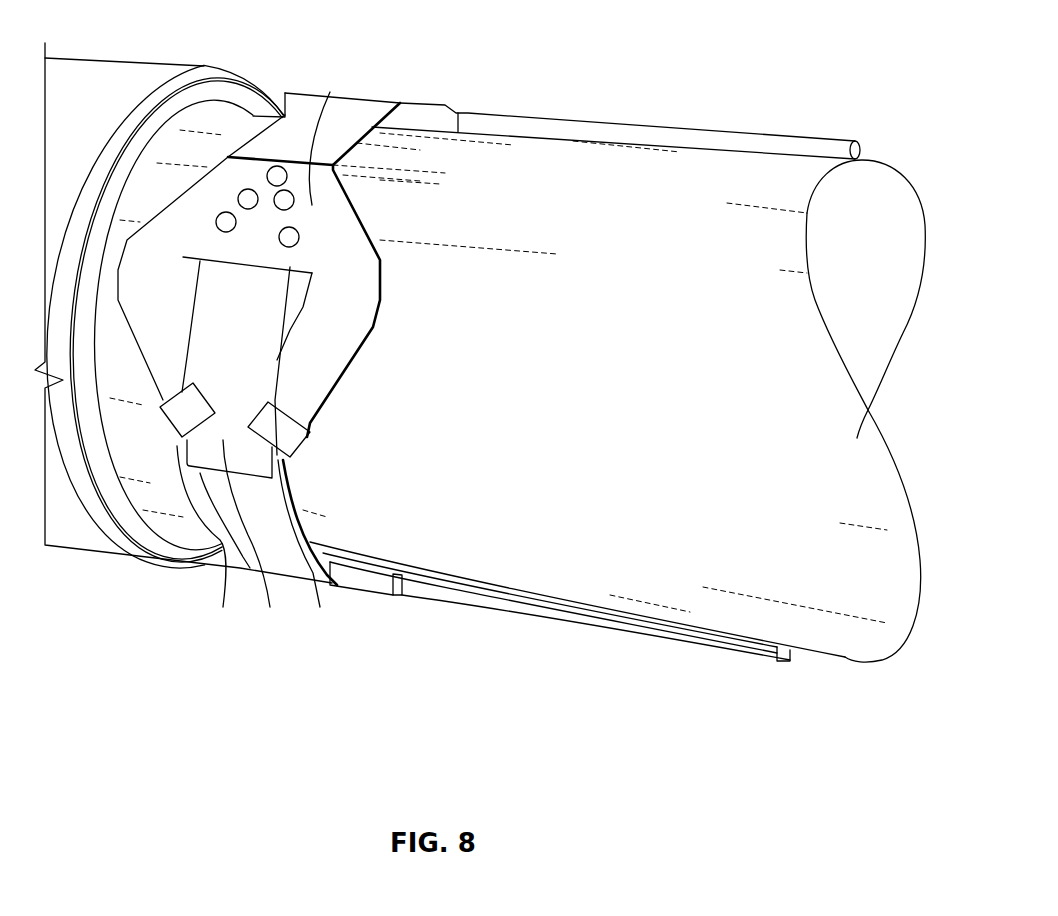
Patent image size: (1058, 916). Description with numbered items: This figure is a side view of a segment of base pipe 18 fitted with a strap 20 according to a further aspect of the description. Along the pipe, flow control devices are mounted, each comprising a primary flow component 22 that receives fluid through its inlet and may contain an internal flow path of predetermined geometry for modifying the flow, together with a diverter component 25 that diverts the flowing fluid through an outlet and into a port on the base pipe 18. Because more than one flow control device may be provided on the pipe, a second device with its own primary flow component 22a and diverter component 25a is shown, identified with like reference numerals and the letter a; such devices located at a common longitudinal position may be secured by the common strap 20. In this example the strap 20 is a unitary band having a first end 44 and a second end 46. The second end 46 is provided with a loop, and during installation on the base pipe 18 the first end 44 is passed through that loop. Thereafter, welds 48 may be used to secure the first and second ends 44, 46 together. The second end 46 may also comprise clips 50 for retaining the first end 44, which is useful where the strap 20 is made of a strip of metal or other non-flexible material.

The base pipe 18 is at (858, 438).
The strap 20 is at (373, 103).
The primary flow component 22 is at (697, 135).
The primary flow component 22a is at (683, 642).
The diverter component 25 is at (445, 104).
The diverter component 25a is at (382, 592).
The first end 44 is at (270, 607).
The second end 46 is at (330, 92).
The welds 48 is at (246, 189).
The clips 50 is at (223, 607).